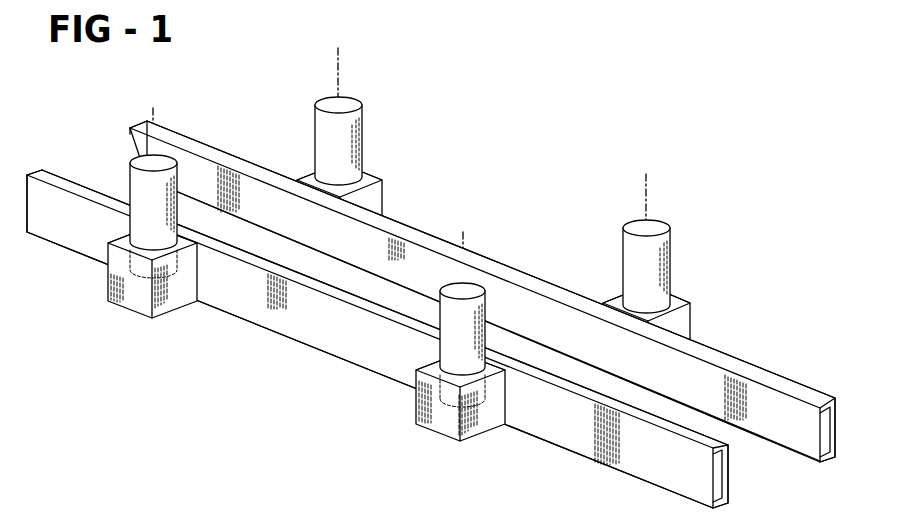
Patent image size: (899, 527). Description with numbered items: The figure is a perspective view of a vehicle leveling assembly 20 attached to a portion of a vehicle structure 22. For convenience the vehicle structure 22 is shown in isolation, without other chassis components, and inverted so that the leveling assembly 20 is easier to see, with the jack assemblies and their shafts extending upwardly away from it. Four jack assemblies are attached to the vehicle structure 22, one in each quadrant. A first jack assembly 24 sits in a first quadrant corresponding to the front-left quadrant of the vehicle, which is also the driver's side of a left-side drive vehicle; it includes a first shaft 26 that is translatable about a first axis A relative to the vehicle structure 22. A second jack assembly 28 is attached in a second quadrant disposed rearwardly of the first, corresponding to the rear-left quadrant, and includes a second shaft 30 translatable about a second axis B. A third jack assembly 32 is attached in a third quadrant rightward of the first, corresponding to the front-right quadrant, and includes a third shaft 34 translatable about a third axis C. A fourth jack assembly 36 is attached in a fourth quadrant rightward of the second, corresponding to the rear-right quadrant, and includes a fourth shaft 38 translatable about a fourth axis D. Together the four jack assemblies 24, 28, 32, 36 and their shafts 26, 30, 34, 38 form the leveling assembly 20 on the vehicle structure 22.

The vehicle leveling assembly 20 is at (494, 168).
The vehicle structure 22 is at (585, 404).
The first jack assembly 24 is at (377, 202).
The first shaft 26 is at (320, 128).
The second jack assembly 28 is at (687, 323).
The second shaft 30 is at (628, 258).
The third jack assembly 32 is at (108, 259).
The third shaft 34 is at (135, 205).
The fourth jack assembly 36 is at (500, 399).
The fourth shaft 38 is at (448, 318).